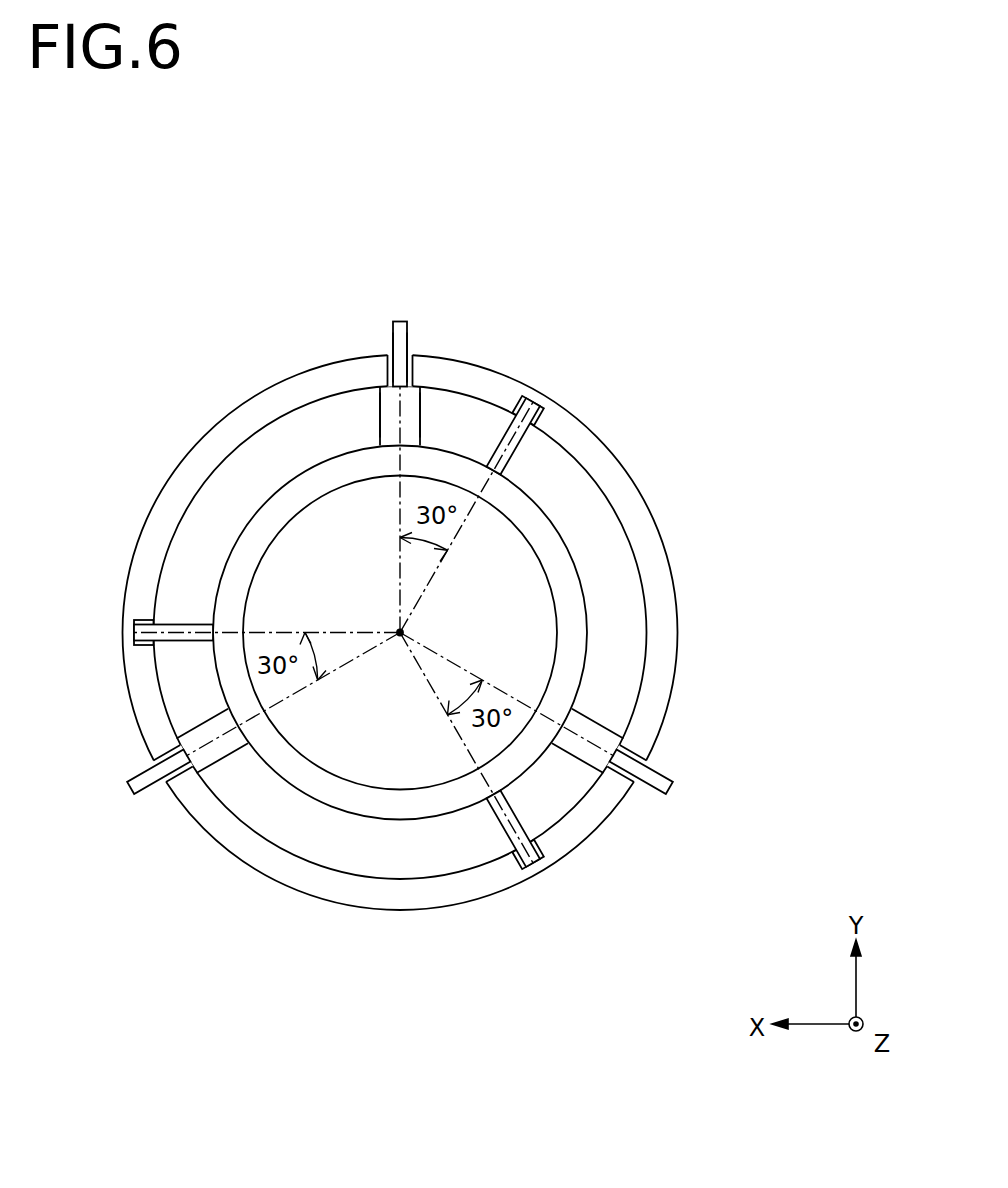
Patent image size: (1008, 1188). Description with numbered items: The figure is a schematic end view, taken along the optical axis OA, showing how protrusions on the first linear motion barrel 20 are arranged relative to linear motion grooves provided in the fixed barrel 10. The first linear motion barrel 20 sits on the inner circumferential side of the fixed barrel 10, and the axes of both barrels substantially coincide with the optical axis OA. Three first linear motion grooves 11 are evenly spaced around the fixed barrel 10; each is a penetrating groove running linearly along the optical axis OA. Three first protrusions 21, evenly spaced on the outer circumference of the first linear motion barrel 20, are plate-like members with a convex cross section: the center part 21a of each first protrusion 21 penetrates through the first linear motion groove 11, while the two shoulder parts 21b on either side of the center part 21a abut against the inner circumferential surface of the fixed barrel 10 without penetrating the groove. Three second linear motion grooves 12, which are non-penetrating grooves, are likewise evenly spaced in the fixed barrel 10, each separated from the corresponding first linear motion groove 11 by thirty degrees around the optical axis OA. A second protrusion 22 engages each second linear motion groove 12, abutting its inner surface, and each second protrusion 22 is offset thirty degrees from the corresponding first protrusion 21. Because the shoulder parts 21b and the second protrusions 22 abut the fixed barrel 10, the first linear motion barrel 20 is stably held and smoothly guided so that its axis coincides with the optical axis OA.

The fixed barrel 10 is at (648, 502).
The first linear motion groove 11 is at (412, 344).
The second linear motion groove 12 is at (543, 421).
The first linear motion barrel 20 is at (252, 515).
The first protrusion 21 is at (404, 335).
The center part 21a is at (403, 372).
The shoulder parts 21b is at (381, 400).
The second protrusion 22 is at (535, 399).
The optical axis OA is at (403, 632).